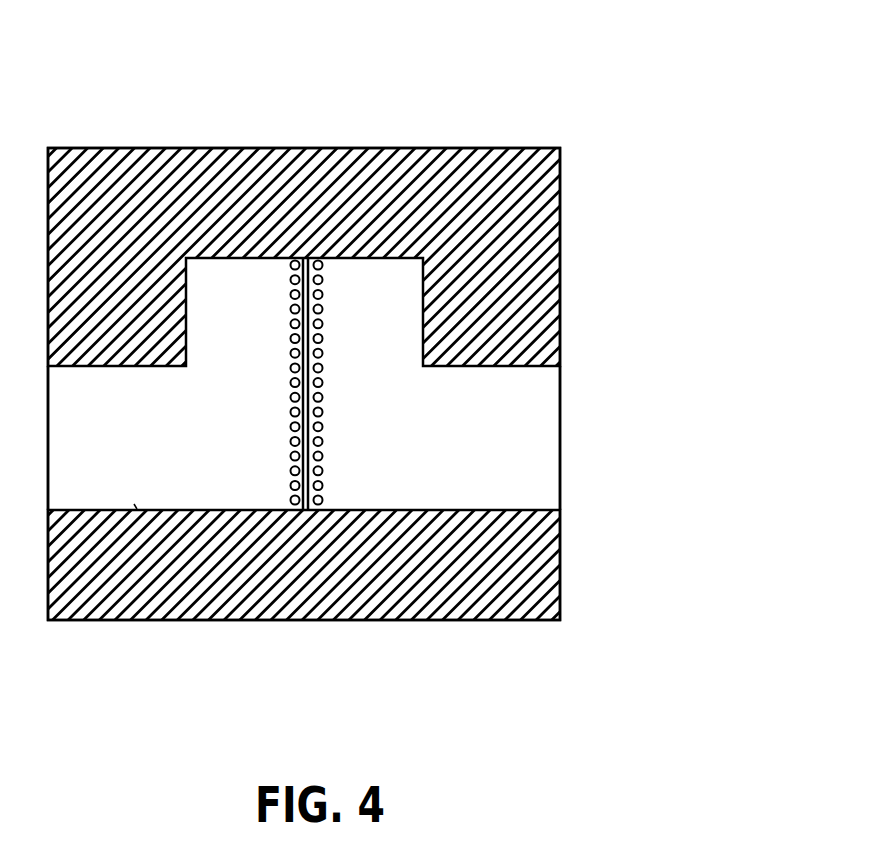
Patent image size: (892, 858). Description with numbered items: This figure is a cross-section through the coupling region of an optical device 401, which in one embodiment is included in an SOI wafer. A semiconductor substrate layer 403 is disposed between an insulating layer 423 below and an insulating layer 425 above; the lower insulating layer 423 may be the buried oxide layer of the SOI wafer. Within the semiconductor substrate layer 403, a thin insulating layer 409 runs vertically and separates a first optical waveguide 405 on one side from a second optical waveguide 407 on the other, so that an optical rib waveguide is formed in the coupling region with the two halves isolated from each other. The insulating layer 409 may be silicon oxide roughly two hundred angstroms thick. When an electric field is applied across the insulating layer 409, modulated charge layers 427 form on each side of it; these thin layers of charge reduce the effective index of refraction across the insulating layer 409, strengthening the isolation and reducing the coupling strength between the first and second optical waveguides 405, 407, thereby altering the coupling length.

The optical device 401 is at (562, 26).
The insulating layer 425 is at (560, 202).
The insulating layer 423 is at (560, 565).
The semiconductor substrate layer 403 is at (548, 422).
The first optical waveguide 405 is at (136, 490).
The second optical waveguide 407 is at (490, 490).
The insulating layer 409 is at (320, 296).
The modulated charge layers 427 is at (325, 440).